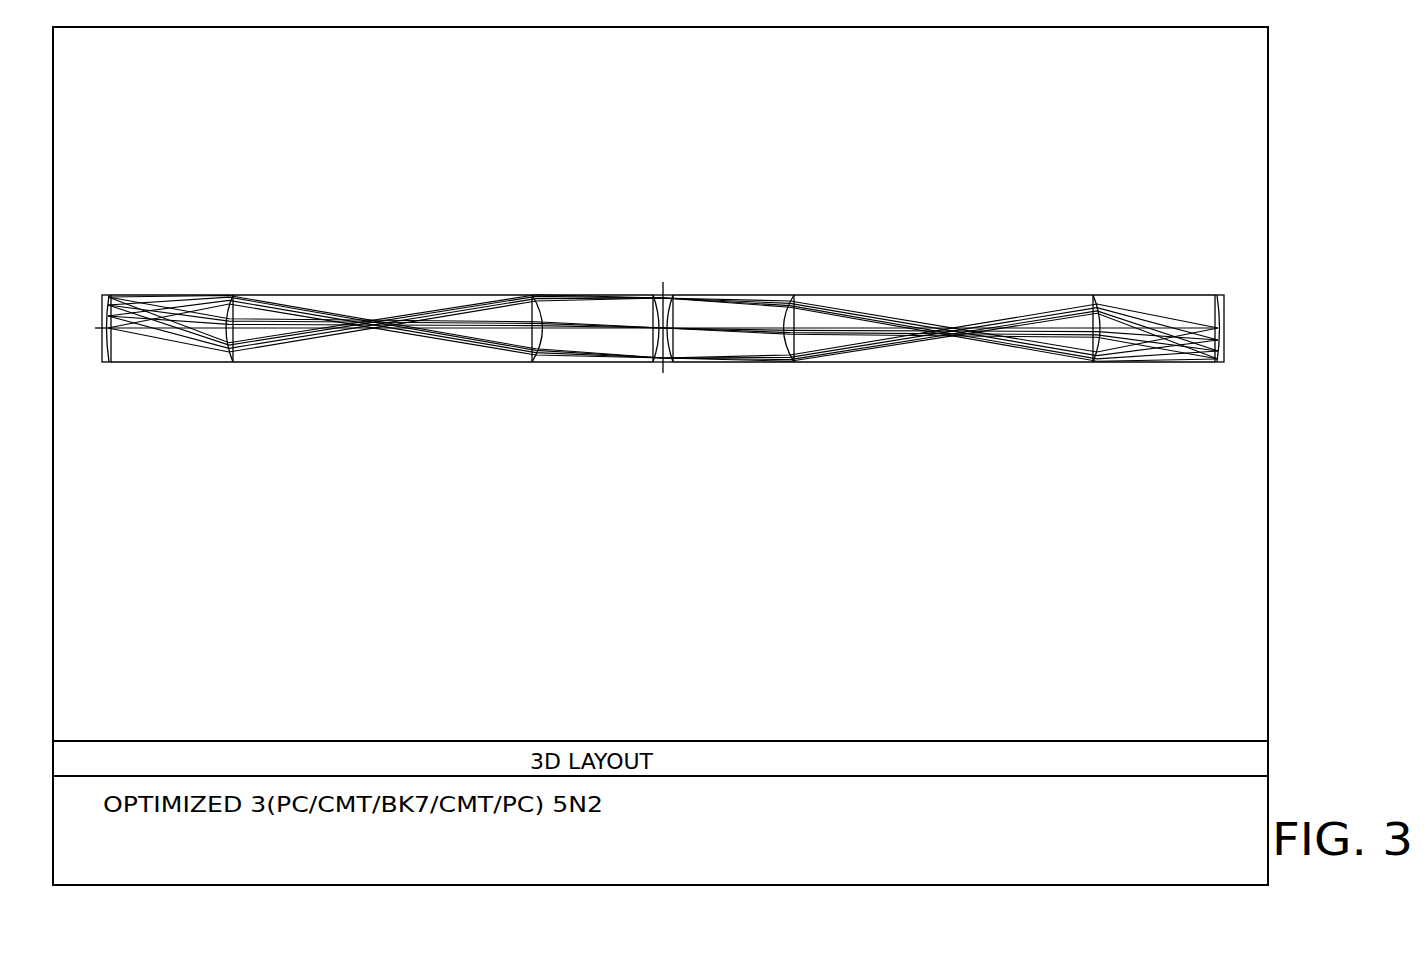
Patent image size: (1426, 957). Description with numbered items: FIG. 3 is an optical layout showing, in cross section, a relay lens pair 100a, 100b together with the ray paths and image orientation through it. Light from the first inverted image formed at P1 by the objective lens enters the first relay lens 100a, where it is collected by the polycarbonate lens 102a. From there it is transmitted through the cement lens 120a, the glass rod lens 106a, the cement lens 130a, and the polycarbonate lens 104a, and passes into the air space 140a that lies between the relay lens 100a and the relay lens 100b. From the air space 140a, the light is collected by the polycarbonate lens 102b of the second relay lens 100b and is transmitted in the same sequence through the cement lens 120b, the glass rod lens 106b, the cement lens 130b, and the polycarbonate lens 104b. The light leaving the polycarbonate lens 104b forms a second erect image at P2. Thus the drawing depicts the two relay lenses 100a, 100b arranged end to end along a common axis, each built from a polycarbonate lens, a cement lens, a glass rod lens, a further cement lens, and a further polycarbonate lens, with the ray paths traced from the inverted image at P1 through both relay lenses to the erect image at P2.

The first inverted image P1 is at (101, 364).
The second erect image P2 is at (1225, 363).
The relay lens 100a is at (380, 353).
The relay lens 100b is at (944, 358).
The polycarbonate lens 102a is at (201, 293).
The polycarbonate lens 102b is at (765, 293).
The polycarbonate lens 104a is at (572, 293).
The polycarbonate lens 104b is at (1108, 293).
The glass rod lens 106a is at (333, 294).
The glass rod lens 106b is at (915, 294).
The cement lens 120a is at (231, 361).
The cement lens 120b is at (792, 345).
The cement lens 130a is at (538, 338).
The cement lens 130b is at (1092, 361).
The air space 140a is at (669, 292).